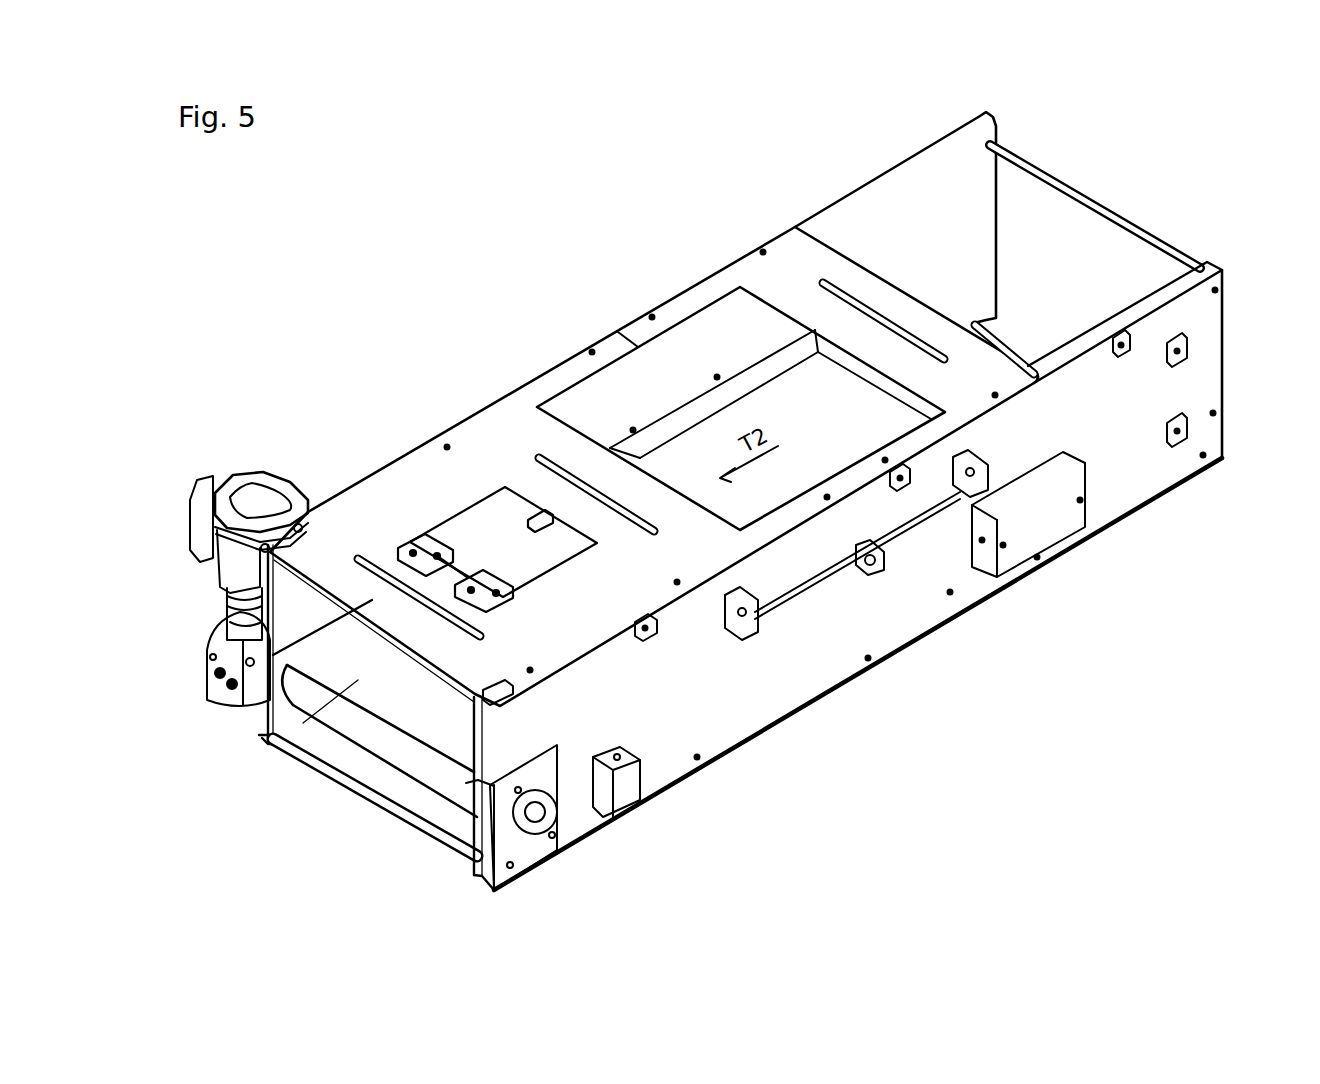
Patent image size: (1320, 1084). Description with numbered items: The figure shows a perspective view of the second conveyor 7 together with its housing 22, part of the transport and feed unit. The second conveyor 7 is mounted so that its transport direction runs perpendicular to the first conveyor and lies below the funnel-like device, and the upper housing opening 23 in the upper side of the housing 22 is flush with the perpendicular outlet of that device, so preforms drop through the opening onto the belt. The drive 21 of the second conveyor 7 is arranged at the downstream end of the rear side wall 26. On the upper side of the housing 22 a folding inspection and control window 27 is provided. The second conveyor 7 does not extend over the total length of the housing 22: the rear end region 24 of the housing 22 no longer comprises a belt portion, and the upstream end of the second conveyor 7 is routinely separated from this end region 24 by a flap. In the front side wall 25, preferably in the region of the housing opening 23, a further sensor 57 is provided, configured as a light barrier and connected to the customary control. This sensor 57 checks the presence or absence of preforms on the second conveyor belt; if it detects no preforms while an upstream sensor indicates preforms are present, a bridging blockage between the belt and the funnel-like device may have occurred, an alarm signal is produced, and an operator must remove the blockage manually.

The second conveyor 7 is at (393, 705).
The drive 21 is at (258, 492).
The housing 22 is at (568, 352).
The upper housing opening 23 is at (687, 340).
The rear end region 24 is at (1033, 213).
The front side wall 25 is at (1133, 480).
The rear side wall 26 is at (870, 222).
The folding inspection and control window 27 is at (480, 542).
The sensor 57 is at (872, 565).